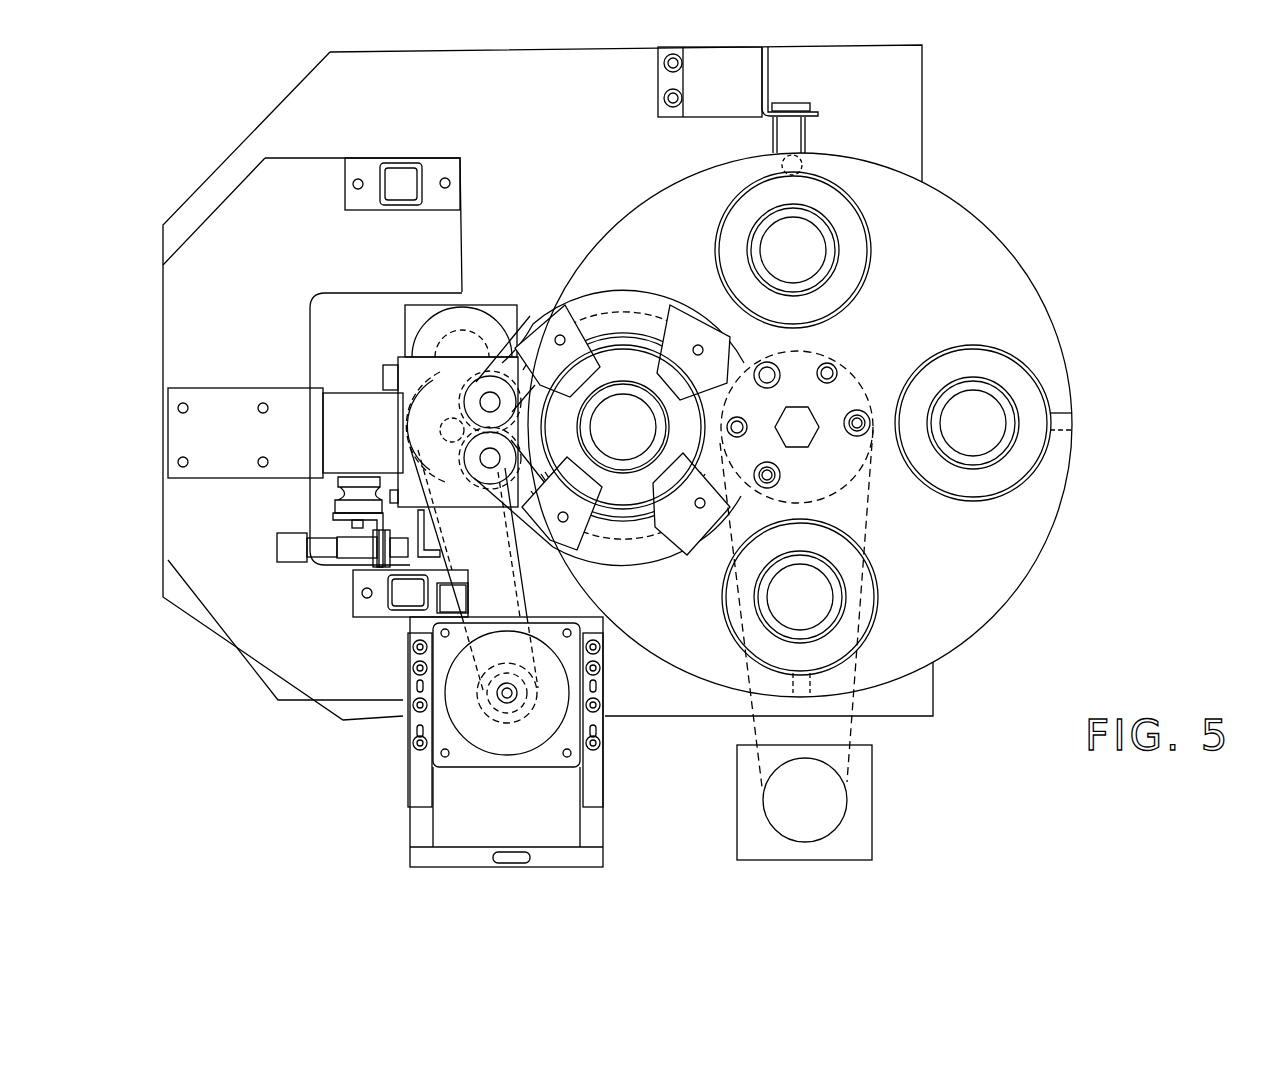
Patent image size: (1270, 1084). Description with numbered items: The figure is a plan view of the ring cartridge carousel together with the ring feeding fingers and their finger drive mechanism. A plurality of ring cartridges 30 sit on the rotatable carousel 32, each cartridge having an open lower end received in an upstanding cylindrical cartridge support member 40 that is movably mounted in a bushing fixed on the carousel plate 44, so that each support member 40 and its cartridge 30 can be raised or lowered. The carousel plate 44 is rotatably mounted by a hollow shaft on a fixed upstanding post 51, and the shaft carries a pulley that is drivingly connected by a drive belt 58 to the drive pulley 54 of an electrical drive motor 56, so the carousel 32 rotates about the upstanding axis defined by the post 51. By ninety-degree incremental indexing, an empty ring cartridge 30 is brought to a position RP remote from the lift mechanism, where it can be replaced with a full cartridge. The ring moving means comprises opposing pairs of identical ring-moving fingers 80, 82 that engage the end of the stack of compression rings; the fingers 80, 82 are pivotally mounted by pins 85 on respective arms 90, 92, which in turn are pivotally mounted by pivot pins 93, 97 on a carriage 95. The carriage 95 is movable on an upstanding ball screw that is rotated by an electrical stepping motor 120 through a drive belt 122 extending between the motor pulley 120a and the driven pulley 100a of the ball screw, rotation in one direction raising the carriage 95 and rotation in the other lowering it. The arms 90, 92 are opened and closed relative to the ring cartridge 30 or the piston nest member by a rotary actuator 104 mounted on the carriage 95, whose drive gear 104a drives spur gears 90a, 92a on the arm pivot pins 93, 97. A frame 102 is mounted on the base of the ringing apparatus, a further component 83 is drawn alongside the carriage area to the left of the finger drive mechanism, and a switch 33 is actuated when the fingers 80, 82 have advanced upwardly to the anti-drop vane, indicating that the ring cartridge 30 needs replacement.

The ring cartridge 30 is at (627, 365).
The rotatable carousel 32 is at (1036, 282).
The switch 33 is at (440, 610).
The cylindrical cartridge support member 40 is at (883, 423).
The carousel plate 44 is at (831, 406).
The upstanding post 51 is at (800, 165).
The drive pulley 54 is at (808, 842).
The electrical drive motor 56 is at (860, 851).
The drive belt 58 is at (820, 727).
The ring-moving finger 80 is at (626, 504).
The ring-moving finger 82 is at (622, 352).
The actuator cylinder 83 is at (272, 548).
The pin 85 is at (700, 509).
The arm 90 is at (643, 553).
The spur gear 90a is at (490, 468).
The arm 92 is at (655, 300).
The spur gear 92a is at (440, 398).
The pivot pin 93 is at (491, 578).
The carriage 95 is at (420, 352).
The pivot pin 97 is at (478, 393).
The driven pulley 100a is at (412, 440).
The frame 102 is at (400, 145).
The rotary actuator 104 is at (470, 322).
The drive gear 104a is at (447, 330).
The electrical stepping motor 120 is at (463, 760).
The motor pulley 120a is at (507, 720).
The drive belt 122 is at (527, 590).
The position remote from the lift mechanism RP is at (1031, 490).